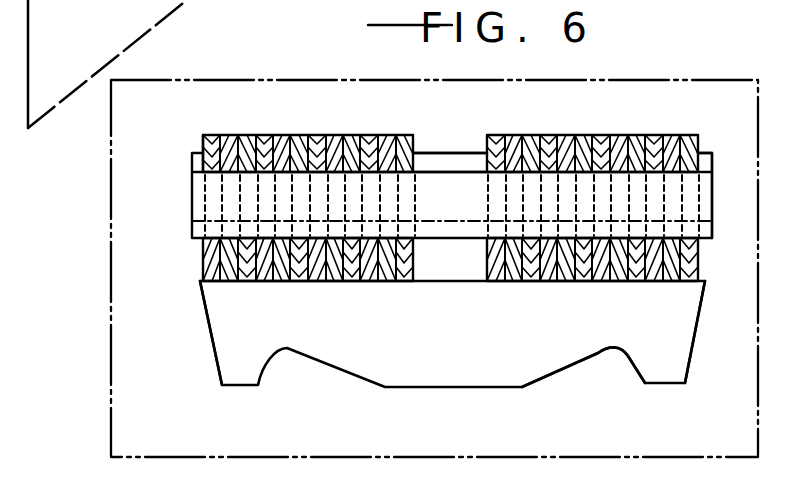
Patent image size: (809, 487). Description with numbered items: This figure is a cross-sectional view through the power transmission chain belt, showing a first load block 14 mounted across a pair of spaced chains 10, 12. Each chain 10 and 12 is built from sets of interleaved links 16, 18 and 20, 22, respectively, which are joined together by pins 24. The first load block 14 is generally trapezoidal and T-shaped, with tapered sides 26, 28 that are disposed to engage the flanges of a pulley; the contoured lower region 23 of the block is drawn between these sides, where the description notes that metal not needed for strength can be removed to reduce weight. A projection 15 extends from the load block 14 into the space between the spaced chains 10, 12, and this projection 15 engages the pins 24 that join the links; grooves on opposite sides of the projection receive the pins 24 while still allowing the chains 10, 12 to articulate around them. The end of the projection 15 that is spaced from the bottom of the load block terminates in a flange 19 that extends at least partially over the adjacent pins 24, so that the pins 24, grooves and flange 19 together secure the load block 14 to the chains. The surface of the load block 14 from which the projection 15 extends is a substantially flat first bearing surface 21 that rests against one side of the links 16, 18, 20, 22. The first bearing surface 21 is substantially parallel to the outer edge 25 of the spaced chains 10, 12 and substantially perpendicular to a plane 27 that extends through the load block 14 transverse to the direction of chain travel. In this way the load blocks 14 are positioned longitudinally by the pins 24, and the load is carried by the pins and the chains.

The chain 10 is at (245, 135).
The chain 12 is at (600, 133).
The first load block 14 is at (427, 372).
The projection 15 is at (447, 255).
The link 16 is at (383, 133).
The link 18 is at (412, 133).
The flange 19 is at (438, 152).
The link 20 is at (670, 133).
The first bearing surface 21 is at (333, 282).
The link 22 is at (686, 134).
The base projection 23 is at (563, 372).
The pin 24 is at (713, 198).
The outer edge 25 is at (203, 142).
The tapered side 26 is at (214, 357).
The plane 27 is at (108, 262).
The tapered side 28 is at (700, 330).